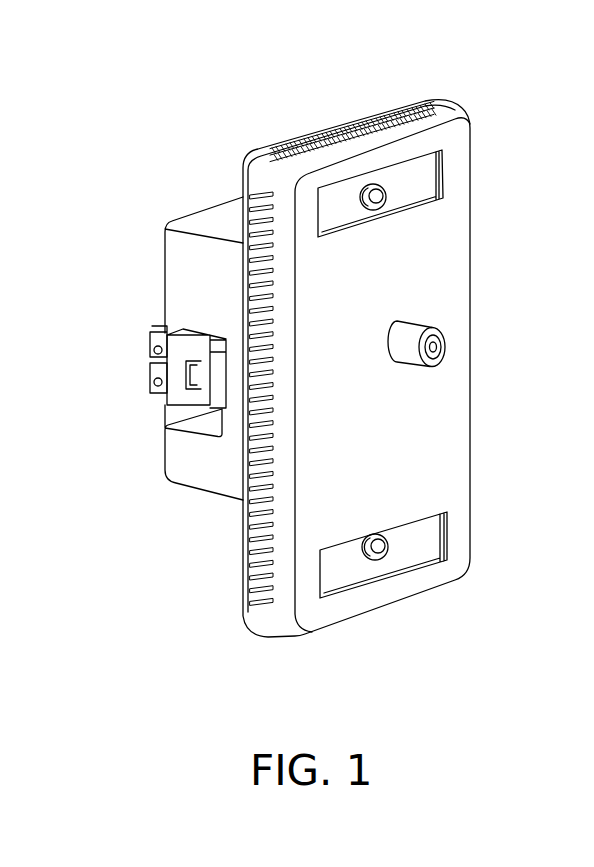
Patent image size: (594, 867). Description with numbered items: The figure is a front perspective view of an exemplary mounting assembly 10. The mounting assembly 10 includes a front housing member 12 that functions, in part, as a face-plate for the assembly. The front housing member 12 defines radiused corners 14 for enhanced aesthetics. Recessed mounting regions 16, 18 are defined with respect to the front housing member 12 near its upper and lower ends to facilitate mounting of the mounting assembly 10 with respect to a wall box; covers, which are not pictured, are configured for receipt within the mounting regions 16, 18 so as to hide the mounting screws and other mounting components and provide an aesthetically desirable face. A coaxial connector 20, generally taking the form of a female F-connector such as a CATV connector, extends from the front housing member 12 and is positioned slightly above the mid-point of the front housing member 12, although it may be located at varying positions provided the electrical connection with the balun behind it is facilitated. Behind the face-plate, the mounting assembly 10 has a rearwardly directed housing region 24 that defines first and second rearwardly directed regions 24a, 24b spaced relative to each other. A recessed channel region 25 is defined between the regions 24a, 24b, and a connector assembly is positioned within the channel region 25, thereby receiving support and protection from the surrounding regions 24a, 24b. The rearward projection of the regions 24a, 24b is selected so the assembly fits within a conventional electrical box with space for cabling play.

The mounting assembly 10 is at (494, 104).
The front housing member 12 is at (443, 420).
The radiused corners 14 is at (262, 171).
The recessed mounting region 16 is at (418, 184).
The recessed mounting region 18 is at (422, 540).
The coaxial connector 20 is at (410, 325).
The housing region 24 is at (177, 245).
The first rearwardly directed region 24a is at (224, 296).
The second rearwardly directed region 24b is at (235, 468).
The recessed channel region 25 is at (203, 424).